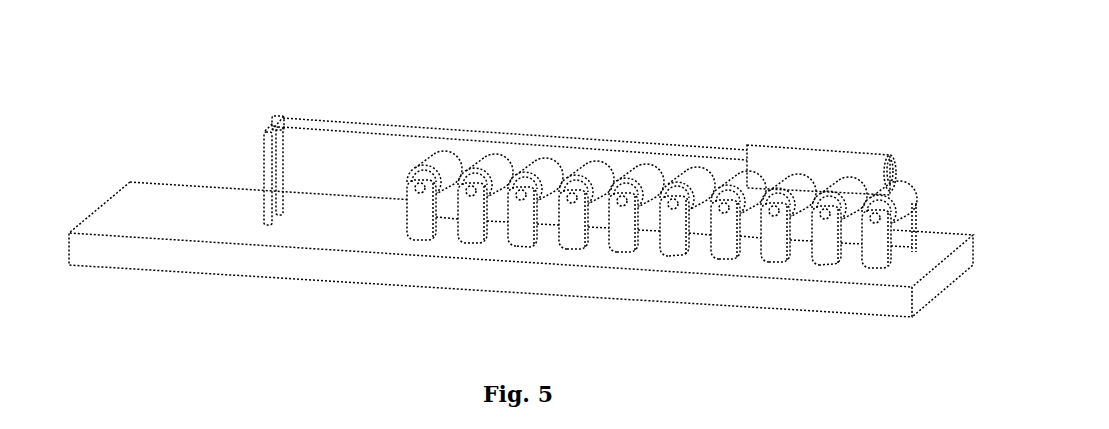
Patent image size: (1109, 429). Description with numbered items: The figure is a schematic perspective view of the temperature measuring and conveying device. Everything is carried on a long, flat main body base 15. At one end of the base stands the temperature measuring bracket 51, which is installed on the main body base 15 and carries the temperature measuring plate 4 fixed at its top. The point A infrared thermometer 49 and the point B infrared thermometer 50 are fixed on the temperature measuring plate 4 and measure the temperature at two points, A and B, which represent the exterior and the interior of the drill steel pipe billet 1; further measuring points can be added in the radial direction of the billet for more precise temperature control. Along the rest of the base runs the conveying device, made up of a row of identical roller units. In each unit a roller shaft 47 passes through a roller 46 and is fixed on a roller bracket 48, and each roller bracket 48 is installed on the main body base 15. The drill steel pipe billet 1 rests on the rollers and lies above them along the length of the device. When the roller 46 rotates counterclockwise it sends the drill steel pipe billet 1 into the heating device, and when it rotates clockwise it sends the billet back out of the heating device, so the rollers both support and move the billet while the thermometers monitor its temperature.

The drill steel pipe billet 1 is at (837, 168).
The temperature measuring plate 4 is at (268, 123).
The main body base 15 is at (913, 285).
The roller 46 is at (900, 198).
The roller shaft 47 is at (877, 218).
The roller bracket 48 is at (887, 247).
The point A infrared thermometer 49 is at (278, 117).
The point B infrared thermometer 50 is at (275, 122).
The temperature measuring bracket 51 is at (263, 177).